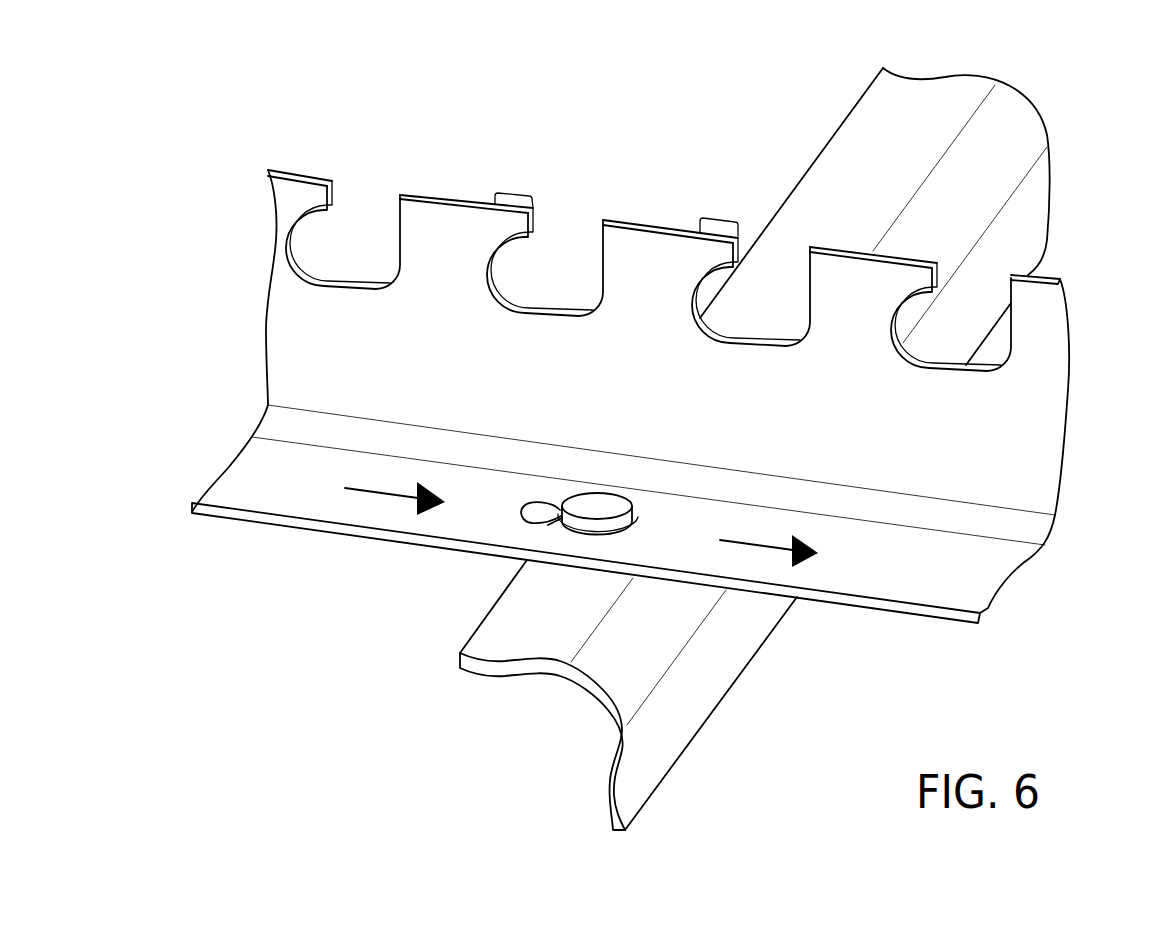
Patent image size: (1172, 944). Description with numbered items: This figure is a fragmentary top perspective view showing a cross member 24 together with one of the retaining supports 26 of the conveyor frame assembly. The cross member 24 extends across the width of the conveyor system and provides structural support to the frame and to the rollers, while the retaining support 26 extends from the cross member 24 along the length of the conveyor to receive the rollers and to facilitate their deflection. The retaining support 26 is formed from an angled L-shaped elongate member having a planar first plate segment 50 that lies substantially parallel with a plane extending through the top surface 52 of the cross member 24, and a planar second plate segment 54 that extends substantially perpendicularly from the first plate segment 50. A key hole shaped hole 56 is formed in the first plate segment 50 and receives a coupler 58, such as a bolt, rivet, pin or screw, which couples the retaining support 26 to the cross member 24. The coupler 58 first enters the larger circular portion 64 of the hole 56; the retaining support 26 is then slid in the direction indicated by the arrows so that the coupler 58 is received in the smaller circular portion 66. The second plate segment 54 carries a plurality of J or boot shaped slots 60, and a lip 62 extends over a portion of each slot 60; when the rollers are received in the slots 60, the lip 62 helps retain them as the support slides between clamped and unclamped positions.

The cross member 24 is at (1040, 97).
The retaining support 26 is at (1070, 293).
The first plate segment 50 is at (227, 475).
The top surface 52 is at (493, 638).
The second plate segment 54 is at (626, 360).
The key hole shaped hole 56 is at (638, 517).
The coupler 58 is at (597, 505).
The slot 60 is at (335, 280).
The lip 62 is at (514, 192).
The larger circular portion 64 is at (548, 525).
The smaller circular portion 66 is at (527, 518).